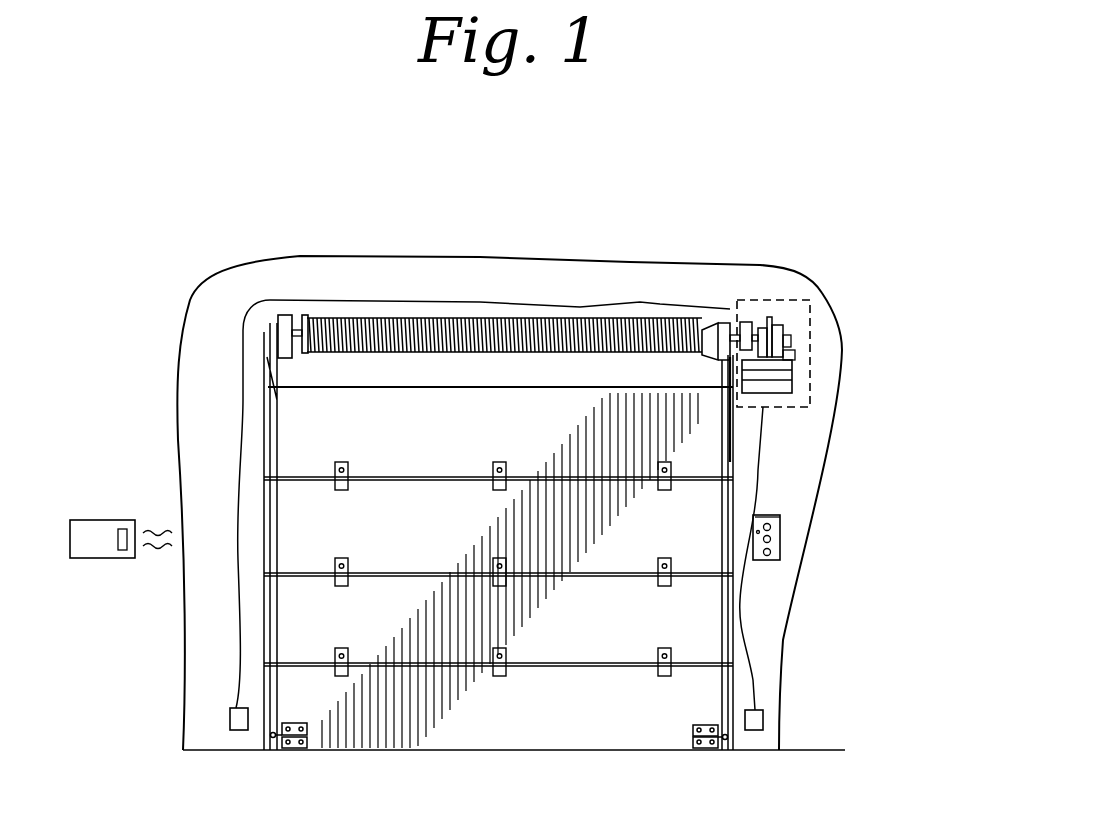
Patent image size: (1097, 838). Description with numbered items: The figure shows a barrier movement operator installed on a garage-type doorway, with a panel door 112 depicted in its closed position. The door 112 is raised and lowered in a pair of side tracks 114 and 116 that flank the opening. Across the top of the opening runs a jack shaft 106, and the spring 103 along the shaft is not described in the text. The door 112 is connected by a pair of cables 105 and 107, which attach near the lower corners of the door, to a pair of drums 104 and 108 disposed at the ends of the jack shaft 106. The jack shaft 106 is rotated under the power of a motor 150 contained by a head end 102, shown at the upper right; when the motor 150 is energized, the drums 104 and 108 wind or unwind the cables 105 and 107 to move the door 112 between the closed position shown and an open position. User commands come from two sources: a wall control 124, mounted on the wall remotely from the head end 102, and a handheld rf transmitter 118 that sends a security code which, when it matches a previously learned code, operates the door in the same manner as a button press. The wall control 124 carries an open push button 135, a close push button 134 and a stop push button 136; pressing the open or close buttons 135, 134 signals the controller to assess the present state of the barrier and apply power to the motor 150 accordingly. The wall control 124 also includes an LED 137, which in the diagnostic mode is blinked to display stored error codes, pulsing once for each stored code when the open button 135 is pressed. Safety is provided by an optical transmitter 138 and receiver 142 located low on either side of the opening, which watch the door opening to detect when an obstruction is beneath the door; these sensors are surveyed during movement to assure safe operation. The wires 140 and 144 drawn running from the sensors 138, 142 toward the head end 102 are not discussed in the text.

The head end 102 is at (836, 345).
The torsion spring 103 is at (617, 252).
The drum 104 is at (210, 262).
The cable 105 is at (273, 708).
The jack shaft 106 is at (262, 250).
The cable 107 is at (723, 707).
The drum 108 is at (772, 255).
The panel door 112 is at (507, 733).
The side track 114 is at (270, 378).
The side track 116 is at (730, 460).
The rf transmitter 118 is at (77, 520).
The wall control 124 is at (821, 521).
The close push button 134 is at (771, 539).
The open push button 135 is at (770, 528).
The stop push button 136 is at (771, 552).
The LED 137 is at (762, 523).
The optical transmitter 138 is at (230, 708).
The wire 140 is at (233, 603).
The optical receiver 142 is at (758, 725).
The wire 144 is at (750, 642).
The motor 150 is at (790, 373).